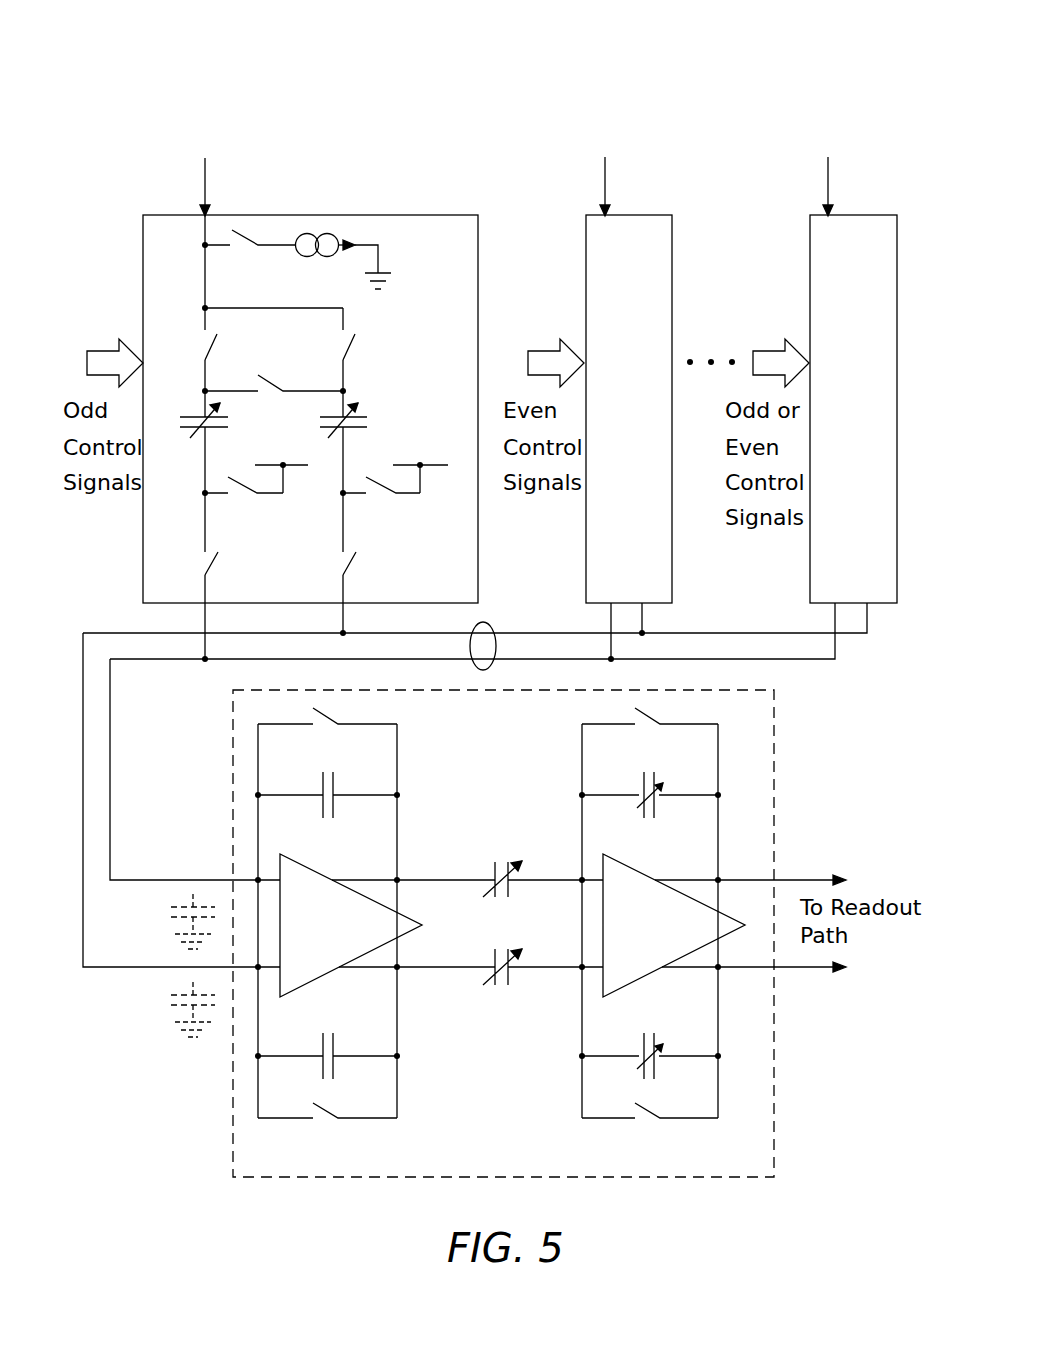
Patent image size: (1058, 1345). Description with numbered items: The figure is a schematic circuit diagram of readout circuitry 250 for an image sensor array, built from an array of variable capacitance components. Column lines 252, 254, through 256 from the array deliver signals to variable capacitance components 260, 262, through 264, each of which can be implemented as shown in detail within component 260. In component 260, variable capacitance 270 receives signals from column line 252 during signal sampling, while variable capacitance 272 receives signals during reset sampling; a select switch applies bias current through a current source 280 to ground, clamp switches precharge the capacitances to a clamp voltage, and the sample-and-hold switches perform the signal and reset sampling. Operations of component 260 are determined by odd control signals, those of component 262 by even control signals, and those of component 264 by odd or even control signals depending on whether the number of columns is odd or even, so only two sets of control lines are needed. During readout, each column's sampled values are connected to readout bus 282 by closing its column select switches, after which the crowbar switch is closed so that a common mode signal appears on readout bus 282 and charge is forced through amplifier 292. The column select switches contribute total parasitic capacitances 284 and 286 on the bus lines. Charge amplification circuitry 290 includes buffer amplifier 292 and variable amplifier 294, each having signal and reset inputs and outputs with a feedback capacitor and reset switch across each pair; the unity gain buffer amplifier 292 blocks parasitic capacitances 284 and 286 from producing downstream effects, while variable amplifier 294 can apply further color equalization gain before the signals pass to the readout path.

The readout circuitry 250 is at (525, 78).
The column line 252 is at (207, 180).
The column line 254 is at (607, 178).
The column line 256 is at (830, 178).
The variable capacitance component 260 is at (364, 215).
The variable capacitance component 262 is at (640, 215).
The variable capacitance component 264 is at (866, 215).
The variable capacitance 270 is at (358, 418).
The variable capacitance 272 is at (176, 435).
The current source 280 is at (322, 257).
The readout bus 282 is at (490, 628).
The parasitic capacitance 284 is at (170, 922).
The parasitic capacitance 286 is at (170, 1010).
The charge amplification circuitry 290 is at (774, 762).
The buffer amplifier 292 is at (393, 903).
The variable amplifier 294 is at (603, 910).